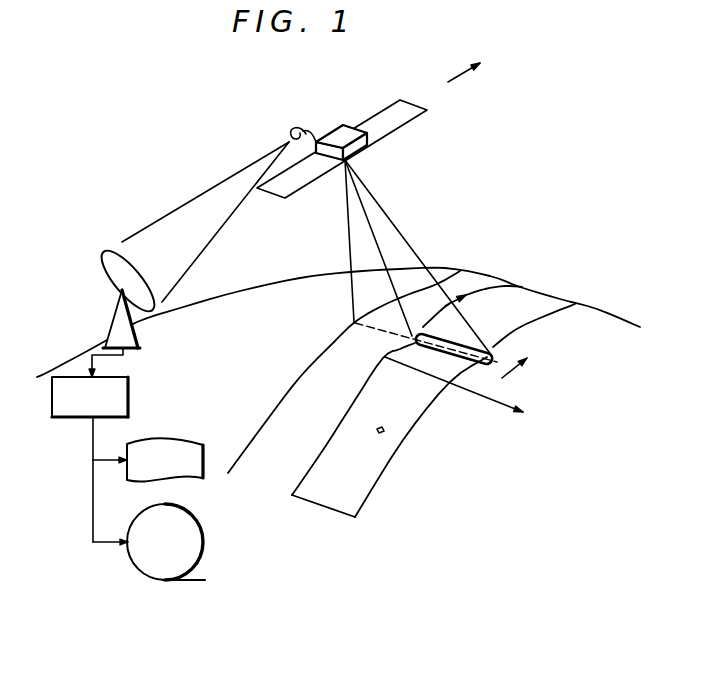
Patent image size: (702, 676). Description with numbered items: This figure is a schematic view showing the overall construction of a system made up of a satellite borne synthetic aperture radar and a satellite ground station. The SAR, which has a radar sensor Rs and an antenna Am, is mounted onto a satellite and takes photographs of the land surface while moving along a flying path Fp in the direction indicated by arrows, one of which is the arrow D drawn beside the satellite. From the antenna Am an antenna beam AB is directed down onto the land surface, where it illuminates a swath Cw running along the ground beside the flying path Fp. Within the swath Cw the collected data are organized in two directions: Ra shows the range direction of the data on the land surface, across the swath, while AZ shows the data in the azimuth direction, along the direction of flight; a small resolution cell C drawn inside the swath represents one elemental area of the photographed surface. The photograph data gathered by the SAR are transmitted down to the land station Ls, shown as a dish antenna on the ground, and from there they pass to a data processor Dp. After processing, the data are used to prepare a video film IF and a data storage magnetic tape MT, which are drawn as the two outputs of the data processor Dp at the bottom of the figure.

The radar sensor Rs is at (347, 123).
The antenna Am is at (403, 115).
The flight direction D is at (457, 82).
The antenna beam AB is at (403, 245).
The land station Ls is at (110, 278).
The flying path Fp is at (320, 352).
The azimuth direction AZ is at (468, 292).
The range direction Ra is at (470, 392).
The resolution cell C is at (382, 427).
The swath Cw is at (382, 463).
The data processor Dp is at (120, 398).
The video film IF is at (192, 448).
The data storage magnetic tape MT is at (193, 543).